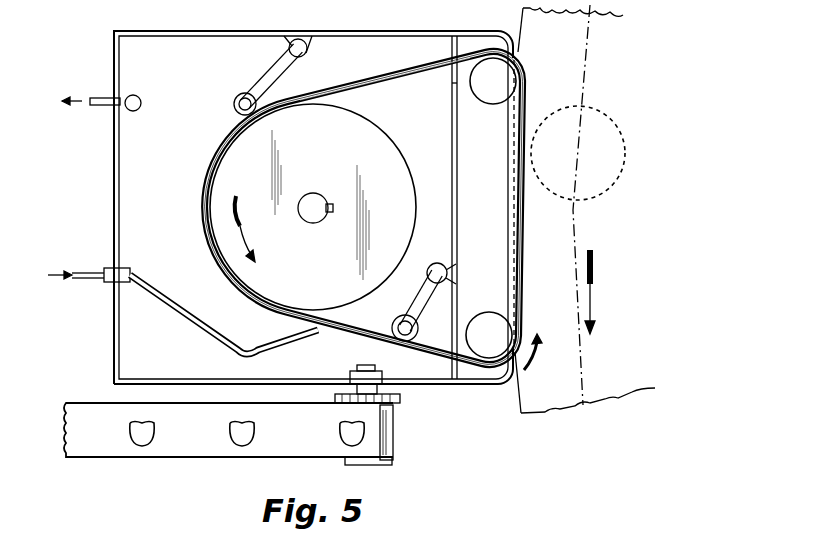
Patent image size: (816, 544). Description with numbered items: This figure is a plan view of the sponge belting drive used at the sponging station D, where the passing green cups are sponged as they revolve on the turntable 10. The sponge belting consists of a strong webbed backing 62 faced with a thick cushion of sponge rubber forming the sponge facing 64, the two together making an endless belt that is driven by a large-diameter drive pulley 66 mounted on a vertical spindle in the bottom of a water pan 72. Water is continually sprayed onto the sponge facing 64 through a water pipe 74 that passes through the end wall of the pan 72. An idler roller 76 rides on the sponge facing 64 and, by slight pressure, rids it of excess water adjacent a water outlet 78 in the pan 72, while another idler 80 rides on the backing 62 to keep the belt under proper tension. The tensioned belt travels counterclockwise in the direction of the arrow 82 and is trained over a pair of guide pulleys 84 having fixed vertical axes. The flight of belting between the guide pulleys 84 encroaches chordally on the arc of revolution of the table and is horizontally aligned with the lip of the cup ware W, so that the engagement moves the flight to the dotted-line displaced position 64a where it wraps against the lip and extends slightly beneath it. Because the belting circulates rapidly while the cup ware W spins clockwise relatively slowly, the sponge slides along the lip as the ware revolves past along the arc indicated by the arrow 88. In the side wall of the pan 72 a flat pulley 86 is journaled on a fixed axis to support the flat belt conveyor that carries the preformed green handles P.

The turntable 10 is at (570, 417).
The webbed backing 62 is at (410, 78).
The sponge facing 64 is at (378, 76).
The displaced position of belt flight 64a is at (514, 186).
The drive pulley 66 is at (413, 205).
The water pan 72 is at (114, 340).
The water pipe 74 is at (202, 318).
The idler roller 76 is at (242, 93).
The water outlet 78 is at (129, 96).
The idler 80 is at (400, 320).
The arrow 82 is at (535, 347).
The guide pulleys 84 is at (492, 104).
The flat pulley 86 is at (378, 467).
The arrow 88 is at (592, 298).
The preformed green handles P is at (242, 457).
The cup ware W is at (617, 133).
The sponging station D is at (544, 234).